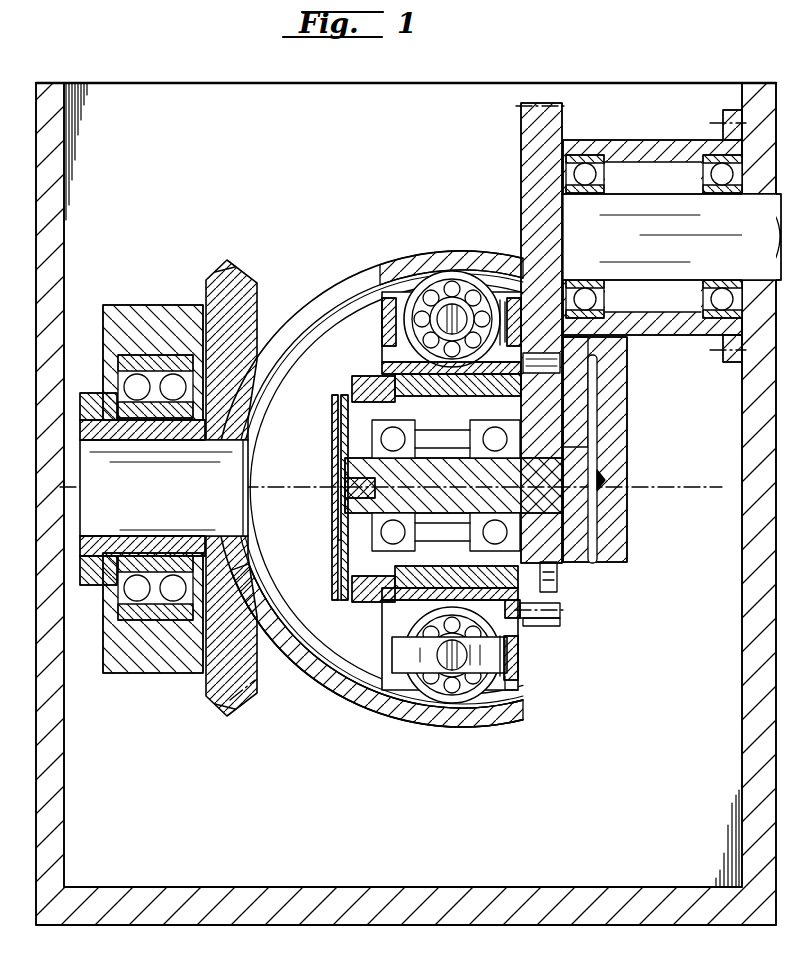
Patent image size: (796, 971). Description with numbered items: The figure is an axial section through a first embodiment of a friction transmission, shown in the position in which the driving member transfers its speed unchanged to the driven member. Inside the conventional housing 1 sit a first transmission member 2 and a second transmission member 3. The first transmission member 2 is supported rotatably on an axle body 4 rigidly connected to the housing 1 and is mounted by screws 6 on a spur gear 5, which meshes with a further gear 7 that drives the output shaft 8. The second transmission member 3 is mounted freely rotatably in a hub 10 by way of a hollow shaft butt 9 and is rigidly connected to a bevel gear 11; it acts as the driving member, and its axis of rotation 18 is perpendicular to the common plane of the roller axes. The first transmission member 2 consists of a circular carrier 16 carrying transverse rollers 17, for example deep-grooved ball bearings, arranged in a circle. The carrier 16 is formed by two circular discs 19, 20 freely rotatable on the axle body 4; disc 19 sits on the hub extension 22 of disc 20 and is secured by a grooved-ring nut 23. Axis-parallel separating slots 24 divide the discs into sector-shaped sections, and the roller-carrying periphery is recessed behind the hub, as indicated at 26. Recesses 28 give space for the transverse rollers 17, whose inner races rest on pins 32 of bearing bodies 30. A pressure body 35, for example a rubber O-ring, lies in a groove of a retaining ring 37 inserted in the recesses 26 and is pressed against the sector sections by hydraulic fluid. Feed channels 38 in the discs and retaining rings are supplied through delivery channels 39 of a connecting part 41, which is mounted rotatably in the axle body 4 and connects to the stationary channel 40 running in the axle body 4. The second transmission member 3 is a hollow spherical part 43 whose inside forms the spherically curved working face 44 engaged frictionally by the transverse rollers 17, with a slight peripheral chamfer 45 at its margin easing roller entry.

The housing 1 is at (228, 895).
The first transmission member 2 is at (372, 300).
The second transmission member 3 is at (353, 268).
The axle body 4 is at (612, 503).
The spur gear 5 is at (561, 608).
The screws 6 is at (558, 583).
The further gear 7 is at (550, 128).
The output shaft 8 is at (645, 200).
The hollow shaft butt 9 is at (145, 432).
The hub 10 is at (152, 668).
The bevel gear 11 is at (228, 702).
The circular carrier 16 is at (374, 327).
The transverse rollers 17 is at (432, 292).
The axis of rotation 18 is at (716, 493).
The circular disc 19 is at (400, 294).
The circular disc 20 is at (515, 300).
The hub extension 22 is at (338, 558).
The grooved-ring nut 23 is at (340, 392).
The separating slots 24 is at (395, 360).
The recess 26 is at (372, 376).
The recesses 28 is at (440, 300).
The bearing body 30 is at (497, 310).
The pins 32 is at (440, 655).
The pressure body 35 is at (522, 612).
The retaining ring 37 is at (552, 622).
The feed channels 38 is at (565, 390).
The delivery channels 39 is at (338, 470).
The delivery channel 40 is at (600, 478).
The connecting part 41 is at (332, 506).
The hollow spherical part 43 is at (330, 692).
The spherically curved working face 44 is at (362, 700).
The peripheral chamfer 45 is at (518, 692).